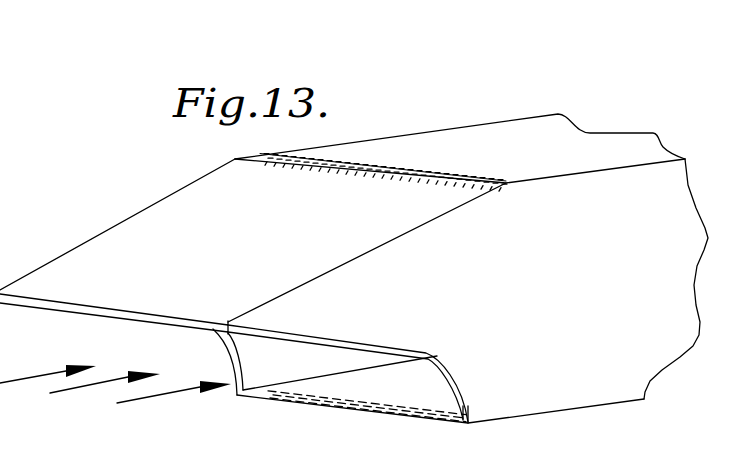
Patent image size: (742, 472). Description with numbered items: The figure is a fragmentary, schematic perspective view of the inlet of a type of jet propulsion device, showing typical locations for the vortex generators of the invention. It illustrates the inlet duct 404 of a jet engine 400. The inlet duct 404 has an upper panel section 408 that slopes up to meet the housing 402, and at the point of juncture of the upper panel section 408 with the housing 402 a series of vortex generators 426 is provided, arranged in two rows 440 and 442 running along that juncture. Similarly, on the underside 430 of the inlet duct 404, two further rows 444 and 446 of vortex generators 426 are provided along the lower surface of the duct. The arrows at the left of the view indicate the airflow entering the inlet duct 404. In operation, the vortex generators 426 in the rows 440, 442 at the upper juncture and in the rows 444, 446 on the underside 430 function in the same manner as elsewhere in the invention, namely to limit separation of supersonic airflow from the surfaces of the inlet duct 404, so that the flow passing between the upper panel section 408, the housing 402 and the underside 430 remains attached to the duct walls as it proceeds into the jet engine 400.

The jet engine 400 is at (354, 247).
The housing 402 is at (593, 147).
The inlet duct 404 is at (253, 231).
The upper panel section 408 is at (174, 237).
The vortex generators 426 is at (399, 278).
The underside 430 is at (554, 413).
The row 440 is at (383, 178).
The row 442 is at (353, 177).
The row 444 is at (399, 418).
The row 446 is at (480, 412).